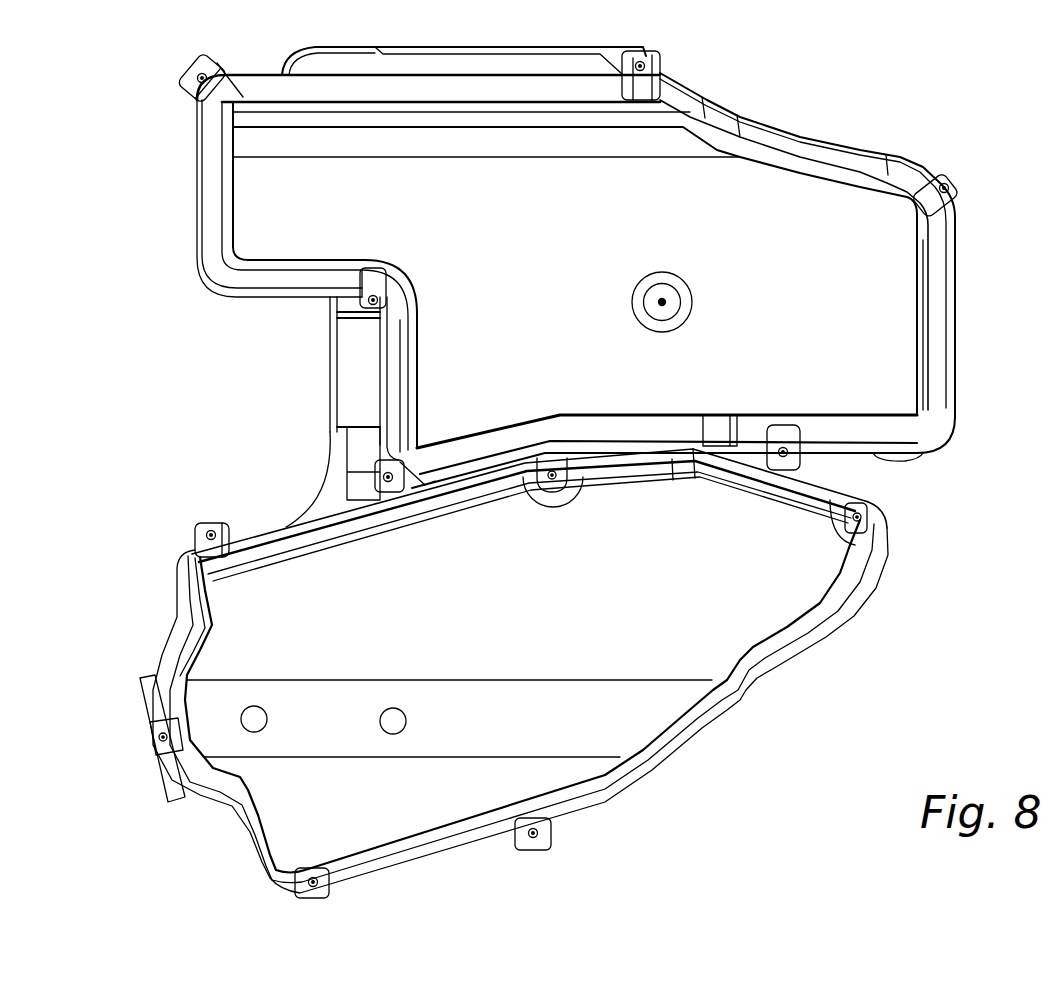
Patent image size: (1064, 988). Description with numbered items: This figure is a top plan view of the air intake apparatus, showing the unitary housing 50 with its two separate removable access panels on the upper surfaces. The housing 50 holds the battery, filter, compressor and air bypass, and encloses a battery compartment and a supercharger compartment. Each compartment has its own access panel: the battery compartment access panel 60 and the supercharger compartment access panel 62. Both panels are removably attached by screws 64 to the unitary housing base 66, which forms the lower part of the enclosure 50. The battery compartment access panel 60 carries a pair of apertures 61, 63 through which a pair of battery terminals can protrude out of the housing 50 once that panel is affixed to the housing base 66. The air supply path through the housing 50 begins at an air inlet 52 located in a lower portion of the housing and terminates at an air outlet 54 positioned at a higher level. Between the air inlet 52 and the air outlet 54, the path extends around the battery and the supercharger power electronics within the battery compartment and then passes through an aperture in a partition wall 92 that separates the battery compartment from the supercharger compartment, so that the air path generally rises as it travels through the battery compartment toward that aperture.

The unitary housing 50 is at (916, 484).
The air inlet 52 is at (135, 711).
The air outlet 54 is at (322, 368).
The battery compartment access panel 60 is at (568, 609).
The aperture 61 is at (267, 713).
The supercharger compartment access panel 62 is at (708, 248).
The aperture 63 is at (406, 715).
The screws 64 is at (190, 66).
The unitary housing base 66 is at (324, 487).
The partition wall 92 is at (928, 460).